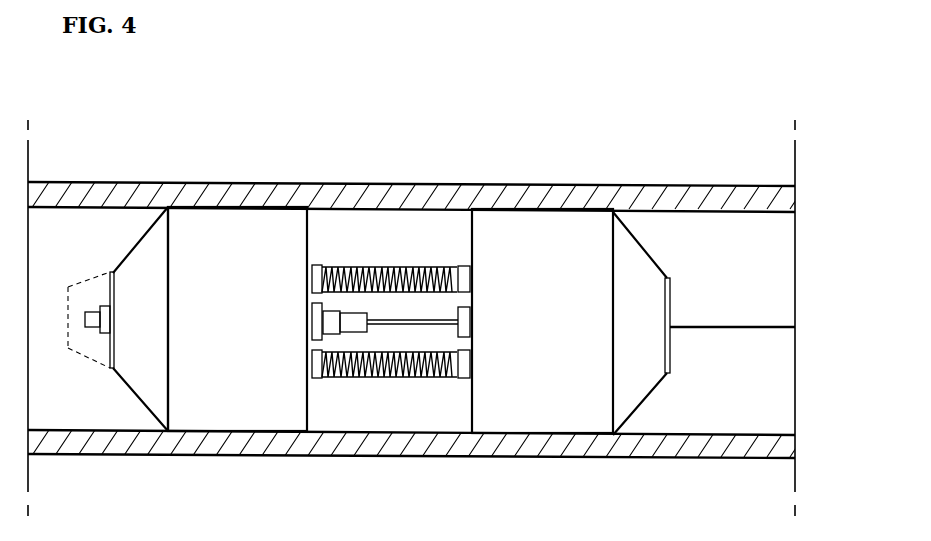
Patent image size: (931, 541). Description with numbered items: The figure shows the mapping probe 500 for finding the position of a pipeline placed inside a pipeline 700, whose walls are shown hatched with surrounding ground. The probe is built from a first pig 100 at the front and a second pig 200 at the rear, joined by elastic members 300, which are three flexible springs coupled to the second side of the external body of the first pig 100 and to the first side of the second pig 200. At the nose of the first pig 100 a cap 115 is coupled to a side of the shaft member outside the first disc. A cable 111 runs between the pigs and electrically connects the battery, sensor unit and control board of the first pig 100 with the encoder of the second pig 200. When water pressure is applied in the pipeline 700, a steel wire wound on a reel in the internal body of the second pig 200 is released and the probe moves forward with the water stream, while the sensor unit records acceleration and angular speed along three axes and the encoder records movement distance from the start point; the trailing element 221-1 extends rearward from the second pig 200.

The pipeline 700 is at (393, 181).
The first pig 100 is at (105, 327).
The mapping probe 500 is at (141, 234).
The cap 115 is at (93, 296).
The elastic members 300 is at (427, 380).
The cable 111 is at (420, 317).
The second pig 200 is at (704, 353).
The rear rod 221-1 is at (733, 324).